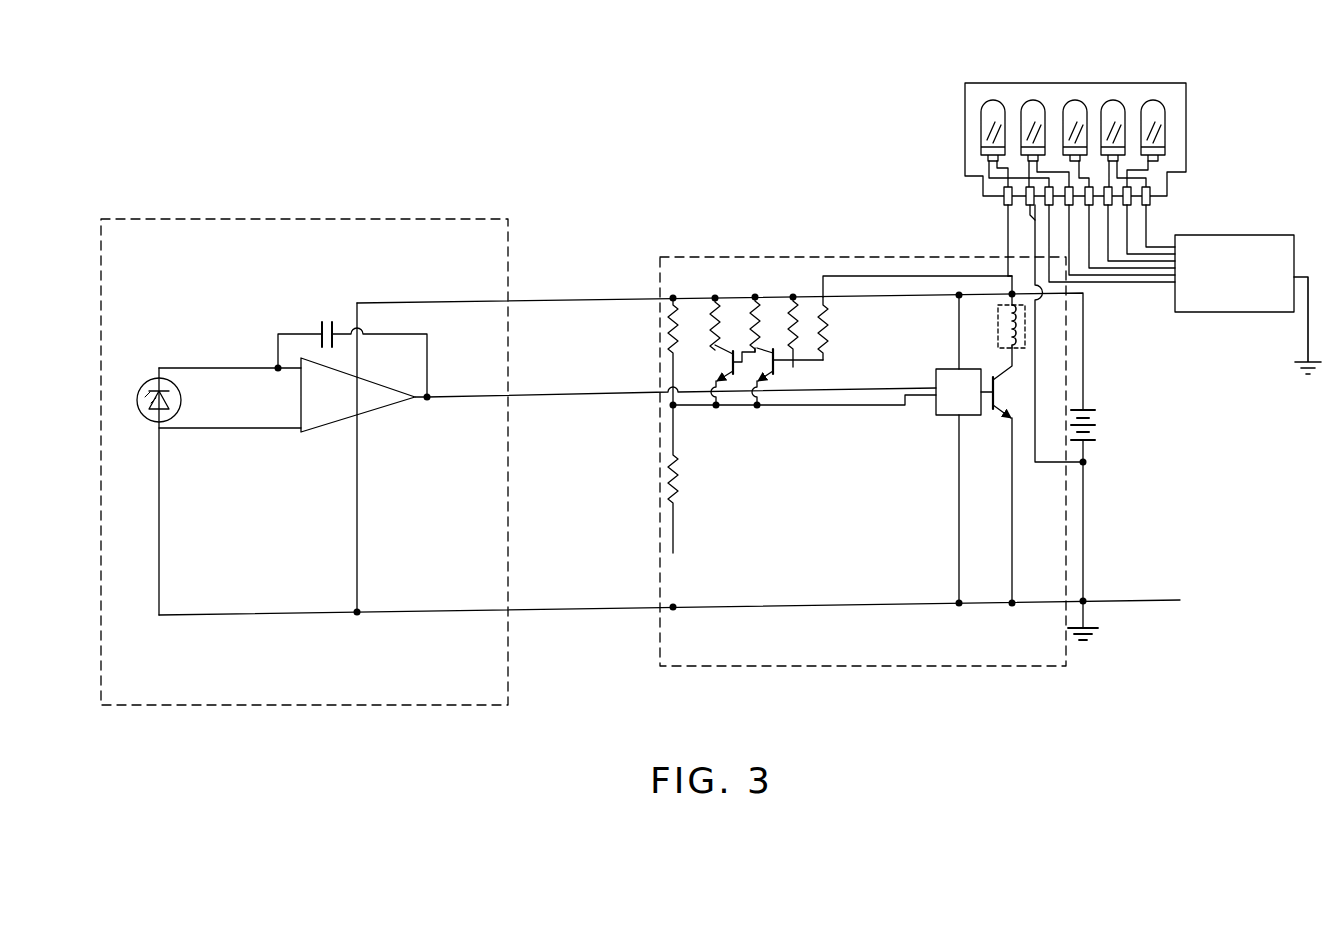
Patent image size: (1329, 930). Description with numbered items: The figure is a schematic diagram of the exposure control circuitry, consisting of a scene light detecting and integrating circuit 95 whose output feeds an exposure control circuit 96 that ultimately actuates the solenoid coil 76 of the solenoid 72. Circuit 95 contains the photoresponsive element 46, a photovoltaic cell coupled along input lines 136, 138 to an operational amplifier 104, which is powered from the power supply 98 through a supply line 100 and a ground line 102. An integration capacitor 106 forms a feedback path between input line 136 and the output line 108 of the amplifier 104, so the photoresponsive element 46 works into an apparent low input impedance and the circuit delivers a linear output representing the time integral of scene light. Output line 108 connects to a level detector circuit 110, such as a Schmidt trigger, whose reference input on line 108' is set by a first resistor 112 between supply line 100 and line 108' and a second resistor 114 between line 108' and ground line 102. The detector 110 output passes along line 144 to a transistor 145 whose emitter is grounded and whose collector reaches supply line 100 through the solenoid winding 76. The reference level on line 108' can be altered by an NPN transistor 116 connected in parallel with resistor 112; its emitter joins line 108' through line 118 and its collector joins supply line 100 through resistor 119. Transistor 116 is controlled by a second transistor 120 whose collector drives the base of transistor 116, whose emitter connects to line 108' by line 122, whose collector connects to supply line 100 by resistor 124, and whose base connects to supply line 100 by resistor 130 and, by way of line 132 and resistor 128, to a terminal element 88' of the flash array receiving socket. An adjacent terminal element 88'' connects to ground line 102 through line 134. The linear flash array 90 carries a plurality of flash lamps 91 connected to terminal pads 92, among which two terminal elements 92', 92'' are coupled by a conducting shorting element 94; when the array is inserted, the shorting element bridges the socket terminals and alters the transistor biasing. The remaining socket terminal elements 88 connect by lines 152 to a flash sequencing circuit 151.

The photoresponsive element 46 is at (170, 388).
The solenoid 72 is at (998, 311).
The solenoid coil 76 is at (1006, 333).
The terminal elements 88 is at (1092, 208).
The terminal element 88' is at (991, 240).
The second terminal element 88'' is at (995, 273).
The linear flash array 90 is at (1144, 80).
The flash lamps 91 is at (1025, 100).
The terminal pads 92 is at (1100, 178).
The terminal element 92' is at (988, 191).
The terminal element 92'' is at (998, 182).
The shorting element 94 is at (1030, 215).
The scene light detecting and integrating circuit 95 is at (432, 218).
The exposure control circuit 96 is at (773, 240).
The power supply 98 is at (1098, 425).
The supply line 100 is at (578, 300).
The ground line 102 is at (572, 611).
The operational amplifier 104 is at (384, 416).
The integration capacitor 106 is at (326, 320).
The output line 108 is at (681, 381).
The input line 108' is at (803, 417).
The level detector circuit 110 is at (946, 368).
The first resistor 112 is at (668, 336).
The second resistor 114 is at (680, 486).
The NPN transistor 116 is at (722, 370).
The line 118 is at (727, 408).
The resistor 119 is at (745, 322).
The second transistor 120 is at (764, 372).
The line 122 is at (762, 408).
The interconnecting resistor 124 is at (766, 322).
The resistor 128 is at (829, 332).
The interconnecting resistor 130 is at (798, 355).
The line 132 is at (920, 276).
The interconnecting line 134 is at (1037, 358).
The input line 136 is at (255, 366).
The input line 138 is at (240, 428).
The line 144 is at (993, 409).
The transistor 145 is at (1013, 414).
The flash sequencing circuit 151 is at (1232, 235).
The lines 152 is at (1158, 277).